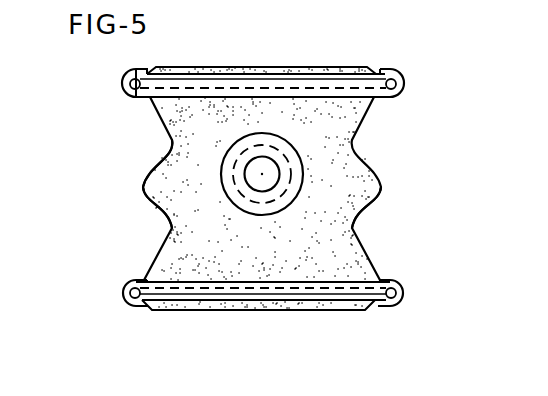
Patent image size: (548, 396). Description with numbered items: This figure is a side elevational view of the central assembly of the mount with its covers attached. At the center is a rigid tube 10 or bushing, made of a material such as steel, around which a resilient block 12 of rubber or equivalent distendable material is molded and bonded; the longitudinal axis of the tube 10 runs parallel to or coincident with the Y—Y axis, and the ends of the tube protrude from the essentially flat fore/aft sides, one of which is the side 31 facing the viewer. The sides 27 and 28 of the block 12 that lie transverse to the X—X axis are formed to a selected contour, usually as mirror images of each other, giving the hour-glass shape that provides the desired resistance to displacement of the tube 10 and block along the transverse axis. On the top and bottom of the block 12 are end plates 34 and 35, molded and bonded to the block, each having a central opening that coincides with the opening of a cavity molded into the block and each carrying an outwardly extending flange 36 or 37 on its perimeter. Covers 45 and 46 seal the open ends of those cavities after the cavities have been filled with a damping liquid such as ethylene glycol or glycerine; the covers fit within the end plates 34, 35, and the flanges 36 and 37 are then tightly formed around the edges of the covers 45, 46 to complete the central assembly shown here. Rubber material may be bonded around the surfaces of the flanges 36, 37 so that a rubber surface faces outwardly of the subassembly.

The tube 10 is at (283, 178).
The block 12 is at (192, 140).
The side of the block 27 is at (172, 222).
The side of the block 28 is at (353, 218).
The fore/aft side 31 is at (164, 174).
The end plate 34 is at (380, 99).
The end plate 35 is at (376, 281).
The flange 36 is at (405, 74).
The flange 37 is at (408, 292).
The cover 45 is at (310, 66).
The cover 46 is at (315, 311).